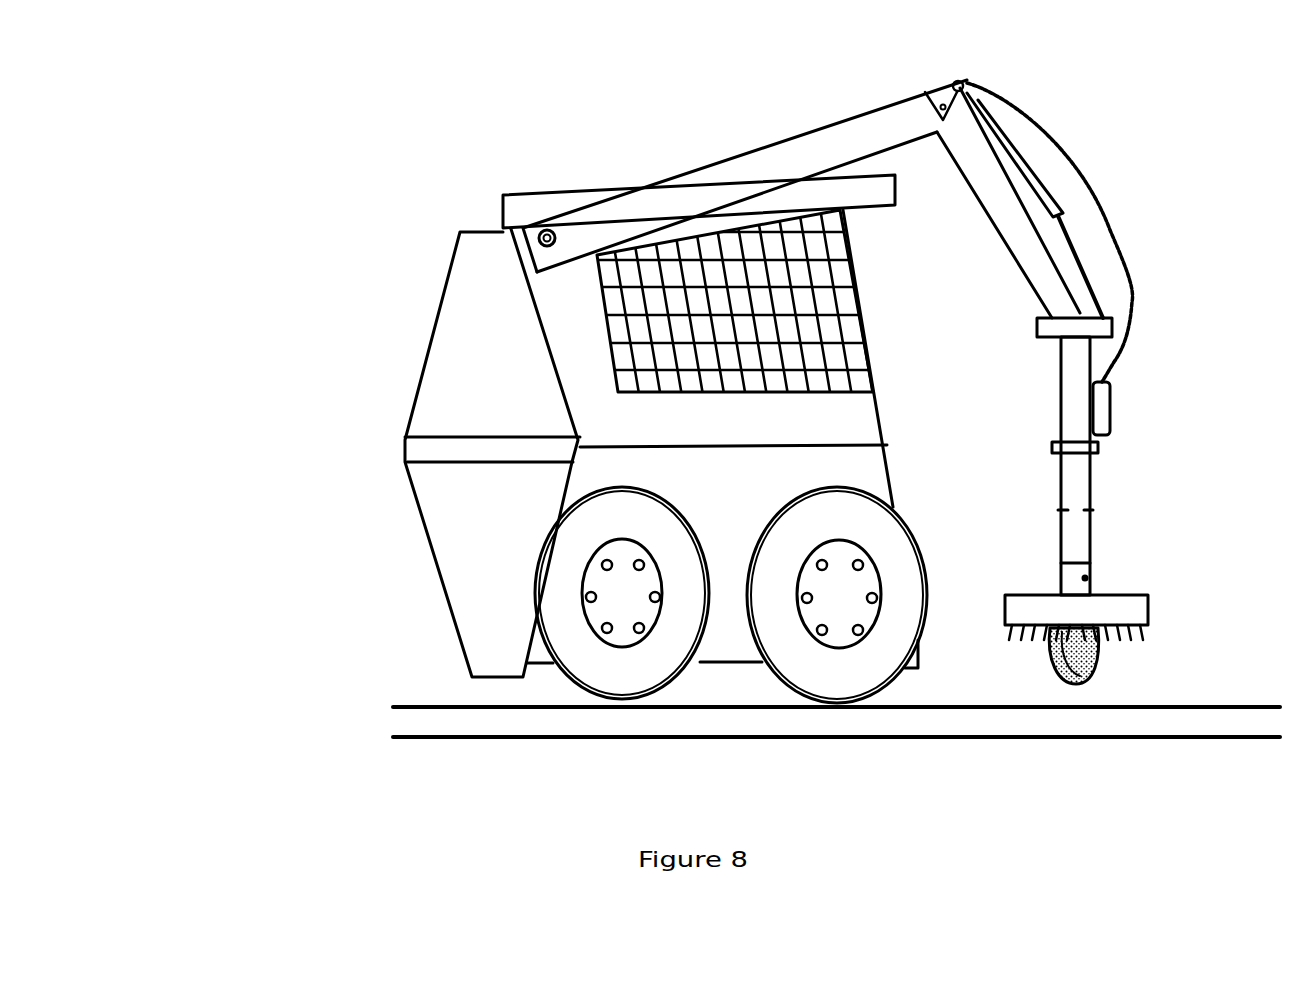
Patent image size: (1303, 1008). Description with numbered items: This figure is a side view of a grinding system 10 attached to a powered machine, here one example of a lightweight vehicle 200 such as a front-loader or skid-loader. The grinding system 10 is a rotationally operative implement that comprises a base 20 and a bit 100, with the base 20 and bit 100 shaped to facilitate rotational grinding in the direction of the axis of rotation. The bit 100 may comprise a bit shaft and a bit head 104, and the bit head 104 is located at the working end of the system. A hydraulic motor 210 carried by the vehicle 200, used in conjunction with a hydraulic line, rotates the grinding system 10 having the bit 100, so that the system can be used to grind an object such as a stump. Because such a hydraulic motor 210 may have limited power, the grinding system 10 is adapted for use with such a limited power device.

The lightweight vehicle 200 is at (382, 188).
The hydraulic motor 210 is at (1093, 200).
The grinding system 10 is at (1153, 540).
The base 20 is at (1005, 577).
The bit 100 is at (1120, 668).
The bit head 104 is at (1058, 670).